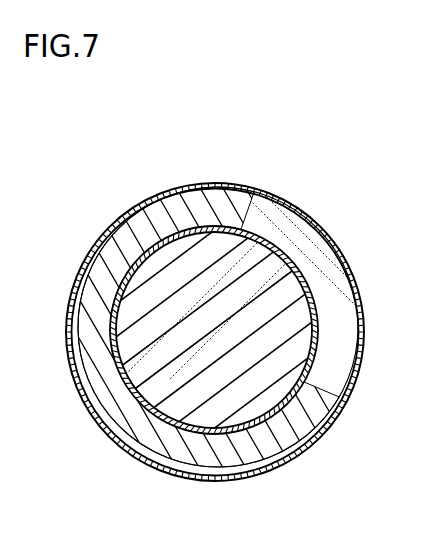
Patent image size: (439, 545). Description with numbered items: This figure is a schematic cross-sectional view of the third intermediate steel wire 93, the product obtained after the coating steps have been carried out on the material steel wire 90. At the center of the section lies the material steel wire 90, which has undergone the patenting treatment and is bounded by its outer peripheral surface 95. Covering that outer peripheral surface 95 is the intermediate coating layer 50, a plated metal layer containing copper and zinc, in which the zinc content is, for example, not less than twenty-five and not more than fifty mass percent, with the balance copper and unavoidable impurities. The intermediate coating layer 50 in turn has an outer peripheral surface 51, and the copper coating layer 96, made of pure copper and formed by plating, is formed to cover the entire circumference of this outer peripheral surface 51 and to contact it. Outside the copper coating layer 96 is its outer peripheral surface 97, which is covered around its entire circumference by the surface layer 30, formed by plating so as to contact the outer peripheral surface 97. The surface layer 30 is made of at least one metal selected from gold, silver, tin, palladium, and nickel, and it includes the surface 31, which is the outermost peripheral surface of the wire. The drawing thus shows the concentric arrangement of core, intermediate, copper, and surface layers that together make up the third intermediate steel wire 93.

The third intermediate steel wire 93 is at (313, 158).
The outer peripheral surface of the copper coating layer 97 is at (310, 228).
The copper coating layer 96 is at (312, 253).
The outer peripheral surface of the material steel wire 95 is at (314, 320).
The material steel wire 90 is at (282, 302).
The intermediate coating layer 50 is at (193, 227).
The outer peripheral surface of the intermediate coating layer 51 is at (235, 227).
The surface layer 30 is at (218, 480).
The surface 31 is at (265, 478).